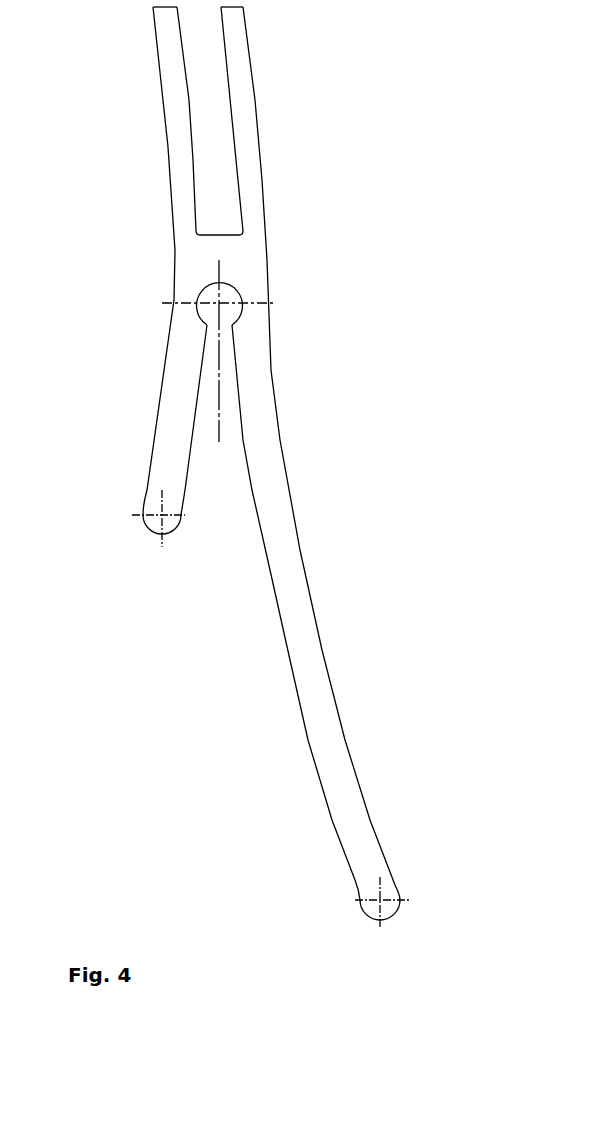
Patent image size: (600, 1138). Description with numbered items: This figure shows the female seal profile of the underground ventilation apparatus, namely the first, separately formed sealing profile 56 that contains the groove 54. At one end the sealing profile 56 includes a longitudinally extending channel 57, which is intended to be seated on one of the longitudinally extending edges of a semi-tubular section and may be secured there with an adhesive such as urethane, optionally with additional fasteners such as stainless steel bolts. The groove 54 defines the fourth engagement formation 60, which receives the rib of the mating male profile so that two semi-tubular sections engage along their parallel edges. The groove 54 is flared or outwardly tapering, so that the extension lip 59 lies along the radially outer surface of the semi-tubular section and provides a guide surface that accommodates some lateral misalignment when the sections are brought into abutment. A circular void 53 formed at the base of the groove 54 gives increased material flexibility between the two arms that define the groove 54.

The circular void 53 is at (188, 291).
The groove 54 is at (214, 494).
The sealing profile 56 is at (259, 467).
The channel 57 is at (208, 151).
The extension lip 59 is at (352, 724).
The fourth engagement formation 60 is at (222, 554).